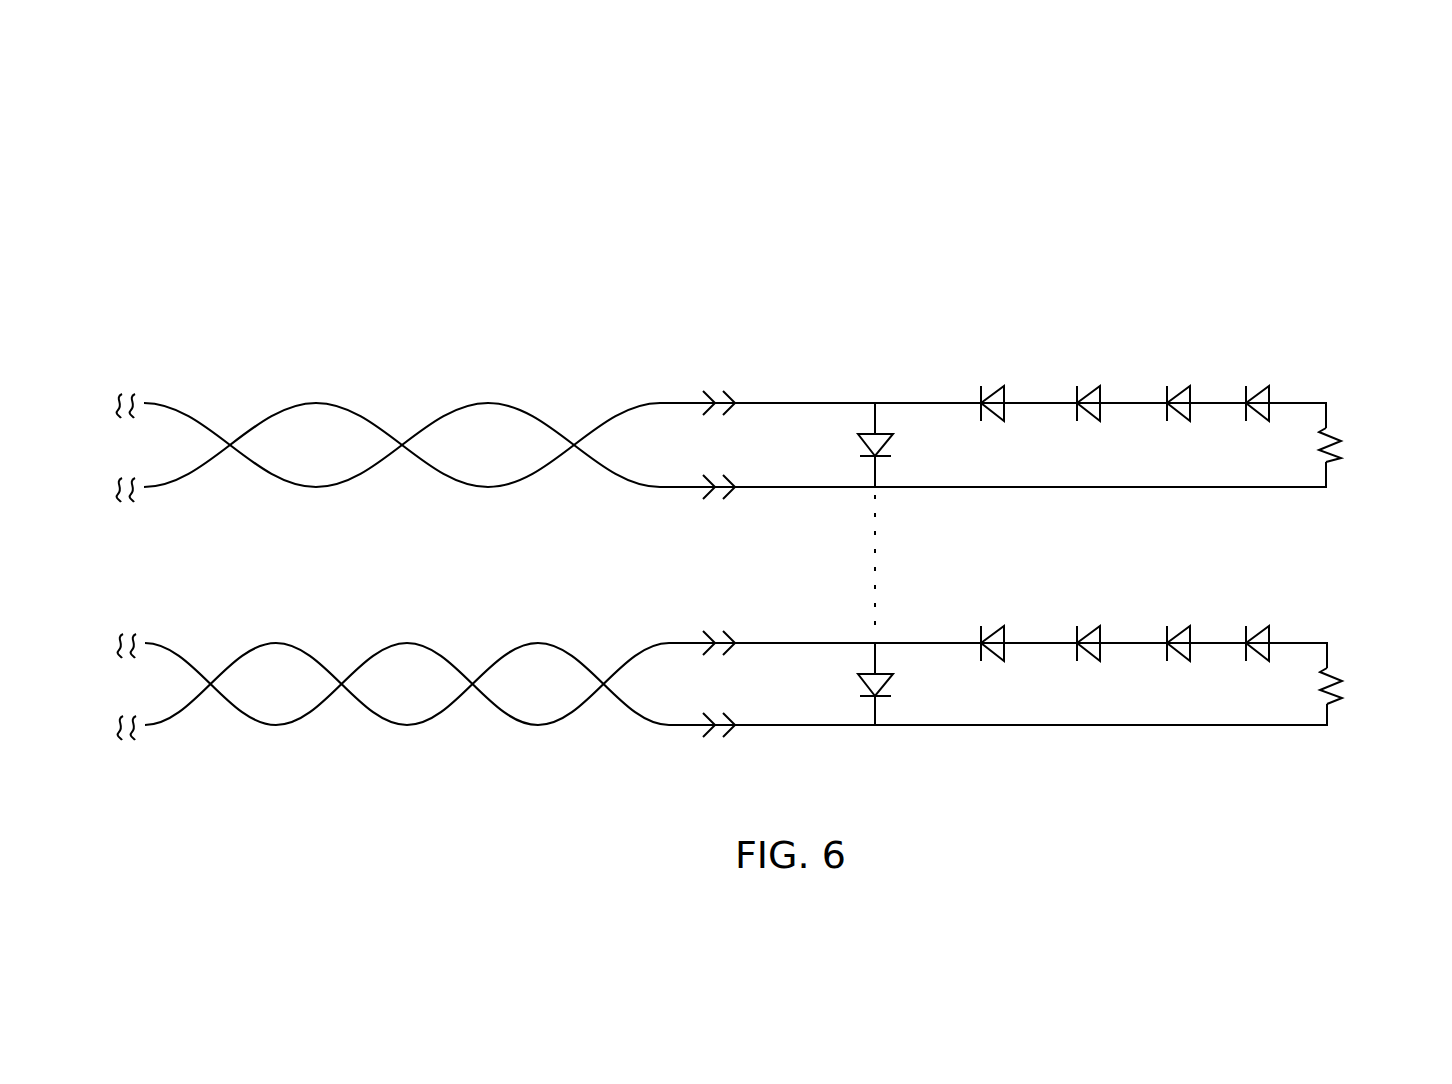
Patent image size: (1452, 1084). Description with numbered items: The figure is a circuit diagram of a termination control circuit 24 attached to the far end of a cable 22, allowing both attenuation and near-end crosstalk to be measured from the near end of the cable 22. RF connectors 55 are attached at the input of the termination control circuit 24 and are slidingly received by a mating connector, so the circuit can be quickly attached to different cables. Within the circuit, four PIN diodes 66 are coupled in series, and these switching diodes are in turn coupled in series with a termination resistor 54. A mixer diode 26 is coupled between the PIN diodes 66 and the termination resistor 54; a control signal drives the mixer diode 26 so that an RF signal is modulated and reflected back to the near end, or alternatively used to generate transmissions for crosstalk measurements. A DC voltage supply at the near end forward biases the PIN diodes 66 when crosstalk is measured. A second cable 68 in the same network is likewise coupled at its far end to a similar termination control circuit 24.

The cable 22 is at (315, 402).
The termination control circuit 24 is at (1133, 186).
The mixer diode 26 is at (871, 432).
The termination resistor 54 is at (1336, 430).
The RF connectors 55 is at (709, 398).
The PIN diodes 66 is at (1283, 380).
The cable 68 is at (406, 643).